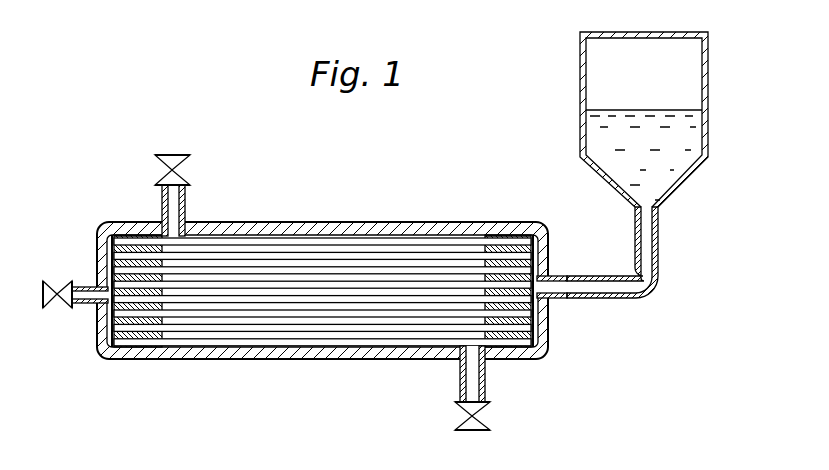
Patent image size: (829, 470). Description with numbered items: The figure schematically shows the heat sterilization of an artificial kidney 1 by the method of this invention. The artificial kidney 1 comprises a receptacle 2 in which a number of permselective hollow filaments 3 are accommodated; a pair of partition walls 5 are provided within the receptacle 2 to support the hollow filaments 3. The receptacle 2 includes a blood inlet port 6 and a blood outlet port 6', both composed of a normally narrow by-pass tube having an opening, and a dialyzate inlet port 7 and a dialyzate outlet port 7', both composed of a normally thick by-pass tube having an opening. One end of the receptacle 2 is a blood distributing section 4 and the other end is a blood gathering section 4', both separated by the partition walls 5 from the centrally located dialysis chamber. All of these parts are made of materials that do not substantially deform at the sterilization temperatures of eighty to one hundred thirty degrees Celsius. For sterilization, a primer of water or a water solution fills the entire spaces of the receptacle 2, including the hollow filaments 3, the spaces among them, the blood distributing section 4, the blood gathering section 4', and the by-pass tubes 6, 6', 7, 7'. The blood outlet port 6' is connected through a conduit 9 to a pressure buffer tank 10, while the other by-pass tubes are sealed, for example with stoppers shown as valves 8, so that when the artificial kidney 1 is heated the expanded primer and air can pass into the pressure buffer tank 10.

The artificial kidney 1 is at (404, 214).
The receptacle 2 is at (352, 359).
The permselective hollow filaments 3 is at (292, 240).
The blood distributing section 4 is at (118, 320).
The blood gathering section 4' is at (538, 315).
The partition walls 5 is at (132, 238).
The blood inlet port 6 is at (84, 264).
The blood outlet port 6' is at (578, 312).
The dialyzate inlet port 7 is at (497, 385).
The dialyzate outlet port 7' is at (199, 203).
The valve 8 is at (182, 154).
The conduit 9 is at (660, 252).
The pressure buffer tank 10 is at (708, 76).